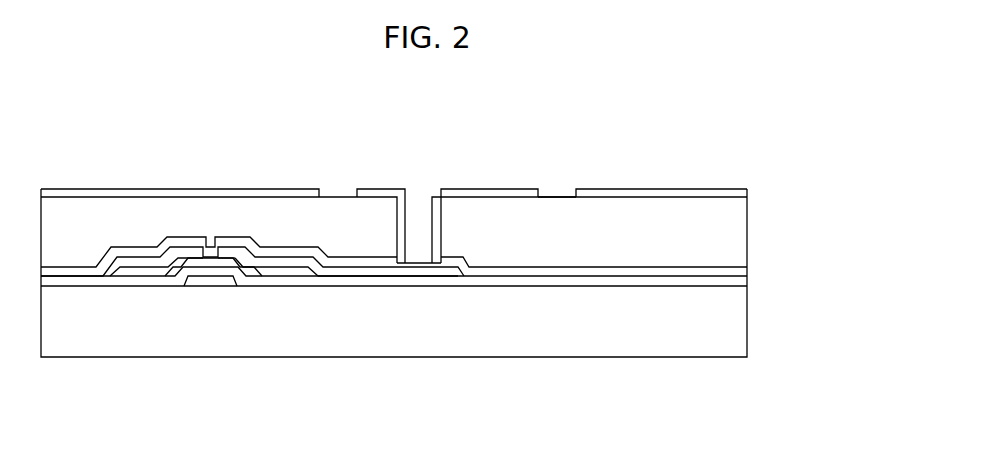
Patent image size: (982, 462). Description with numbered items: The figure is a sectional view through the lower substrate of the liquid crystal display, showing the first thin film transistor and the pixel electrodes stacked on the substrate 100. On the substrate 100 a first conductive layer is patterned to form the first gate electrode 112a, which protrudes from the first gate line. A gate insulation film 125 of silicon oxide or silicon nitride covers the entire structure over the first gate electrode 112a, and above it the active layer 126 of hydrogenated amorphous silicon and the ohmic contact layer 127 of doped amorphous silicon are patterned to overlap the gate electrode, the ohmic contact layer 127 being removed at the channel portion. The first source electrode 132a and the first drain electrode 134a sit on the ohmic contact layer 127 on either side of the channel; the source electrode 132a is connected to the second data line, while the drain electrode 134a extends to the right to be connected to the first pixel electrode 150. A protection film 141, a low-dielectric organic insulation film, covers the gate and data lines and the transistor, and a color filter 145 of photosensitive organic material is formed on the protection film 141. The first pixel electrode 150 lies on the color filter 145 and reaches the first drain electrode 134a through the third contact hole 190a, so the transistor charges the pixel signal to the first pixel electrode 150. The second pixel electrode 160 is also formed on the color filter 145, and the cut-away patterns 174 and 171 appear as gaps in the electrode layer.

The substrate 100 is at (748, 350).
The first gate electrode 112a is at (207, 283).
The gate insulation film 125 is at (748, 283).
The active layer 126 is at (263, 277).
The ohmic contact layer 127 is at (290, 269).
The first source electrode 132a is at (162, 263).
The first drain electrode 134a is at (300, 263).
The protection film 141 is at (748, 268).
The color filter 145 is at (748, 237).
The first pixel electrode 150 is at (260, 193).
The second pixel electrode 160 is at (650, 190).
The cut-away pattern 171 is at (558, 195).
The cut-away pattern 174 is at (338, 193).
The third contact hole 190a is at (421, 192).